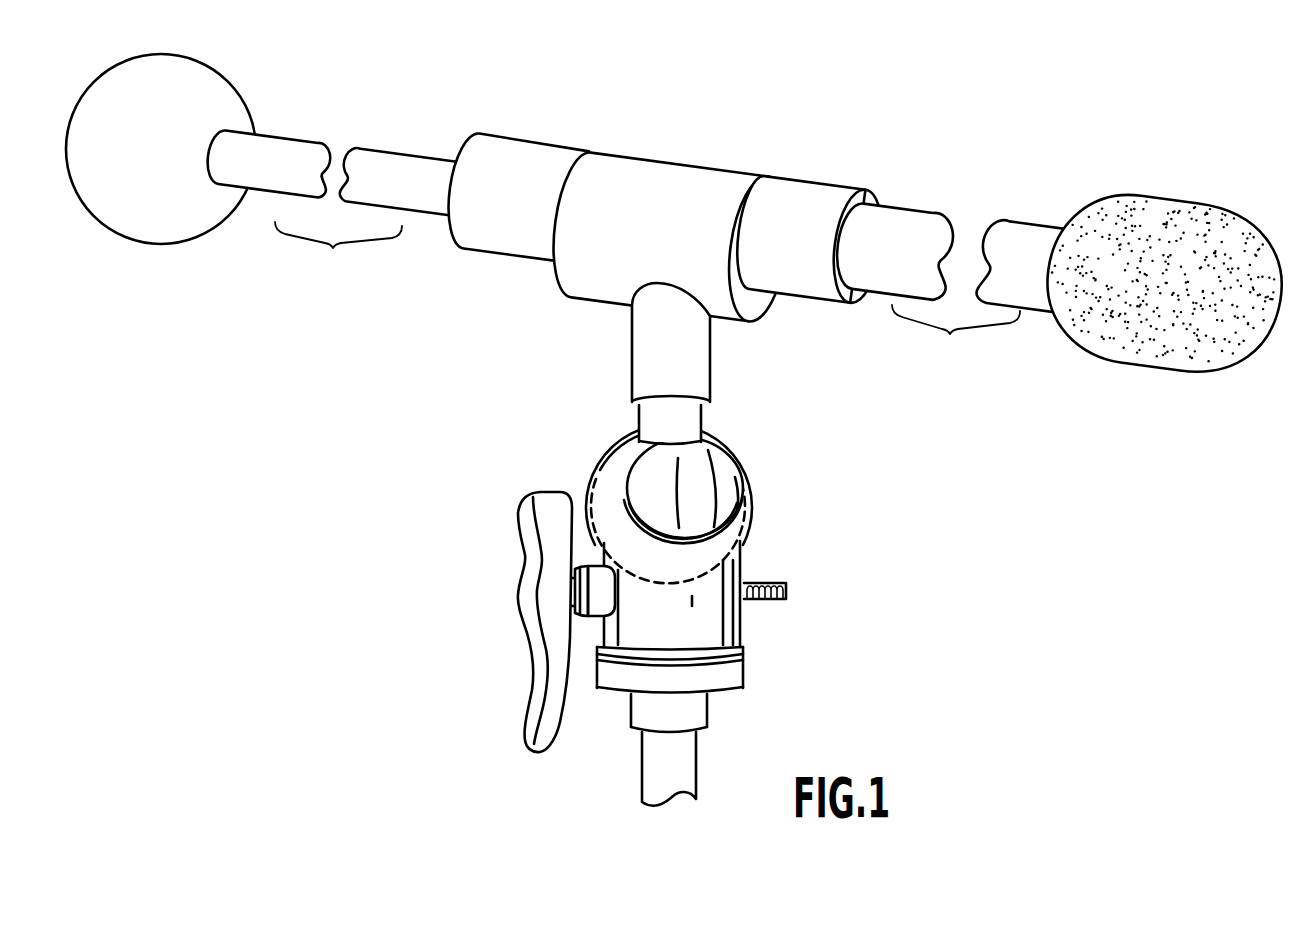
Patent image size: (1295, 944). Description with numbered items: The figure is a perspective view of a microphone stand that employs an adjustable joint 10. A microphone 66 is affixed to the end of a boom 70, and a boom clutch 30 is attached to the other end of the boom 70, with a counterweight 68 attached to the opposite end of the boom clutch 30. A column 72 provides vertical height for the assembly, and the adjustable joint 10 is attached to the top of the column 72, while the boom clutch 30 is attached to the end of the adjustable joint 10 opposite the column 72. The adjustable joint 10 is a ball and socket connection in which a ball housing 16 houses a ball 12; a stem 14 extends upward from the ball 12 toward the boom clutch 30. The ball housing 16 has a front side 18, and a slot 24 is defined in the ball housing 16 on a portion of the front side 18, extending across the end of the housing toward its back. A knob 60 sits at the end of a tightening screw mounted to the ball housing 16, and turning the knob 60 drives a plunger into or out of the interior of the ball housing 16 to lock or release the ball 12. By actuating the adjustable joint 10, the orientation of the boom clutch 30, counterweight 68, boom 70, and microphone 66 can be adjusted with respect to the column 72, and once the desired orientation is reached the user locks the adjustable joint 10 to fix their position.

The adjustable joint 10 is at (752, 668).
The ball 12 is at (650, 487).
The stem 14 is at (690, 424).
The ball housing 16 is at (748, 540).
The front side 18 is at (742, 617).
The slot 24 is at (722, 486).
The boom clutch 30 is at (680, 168).
The knob 60 is at (558, 657).
The microphone 66 is at (1160, 230).
The counterweight 68 is at (145, 238).
The boom 70 is at (920, 215).
The column 72 is at (653, 762).